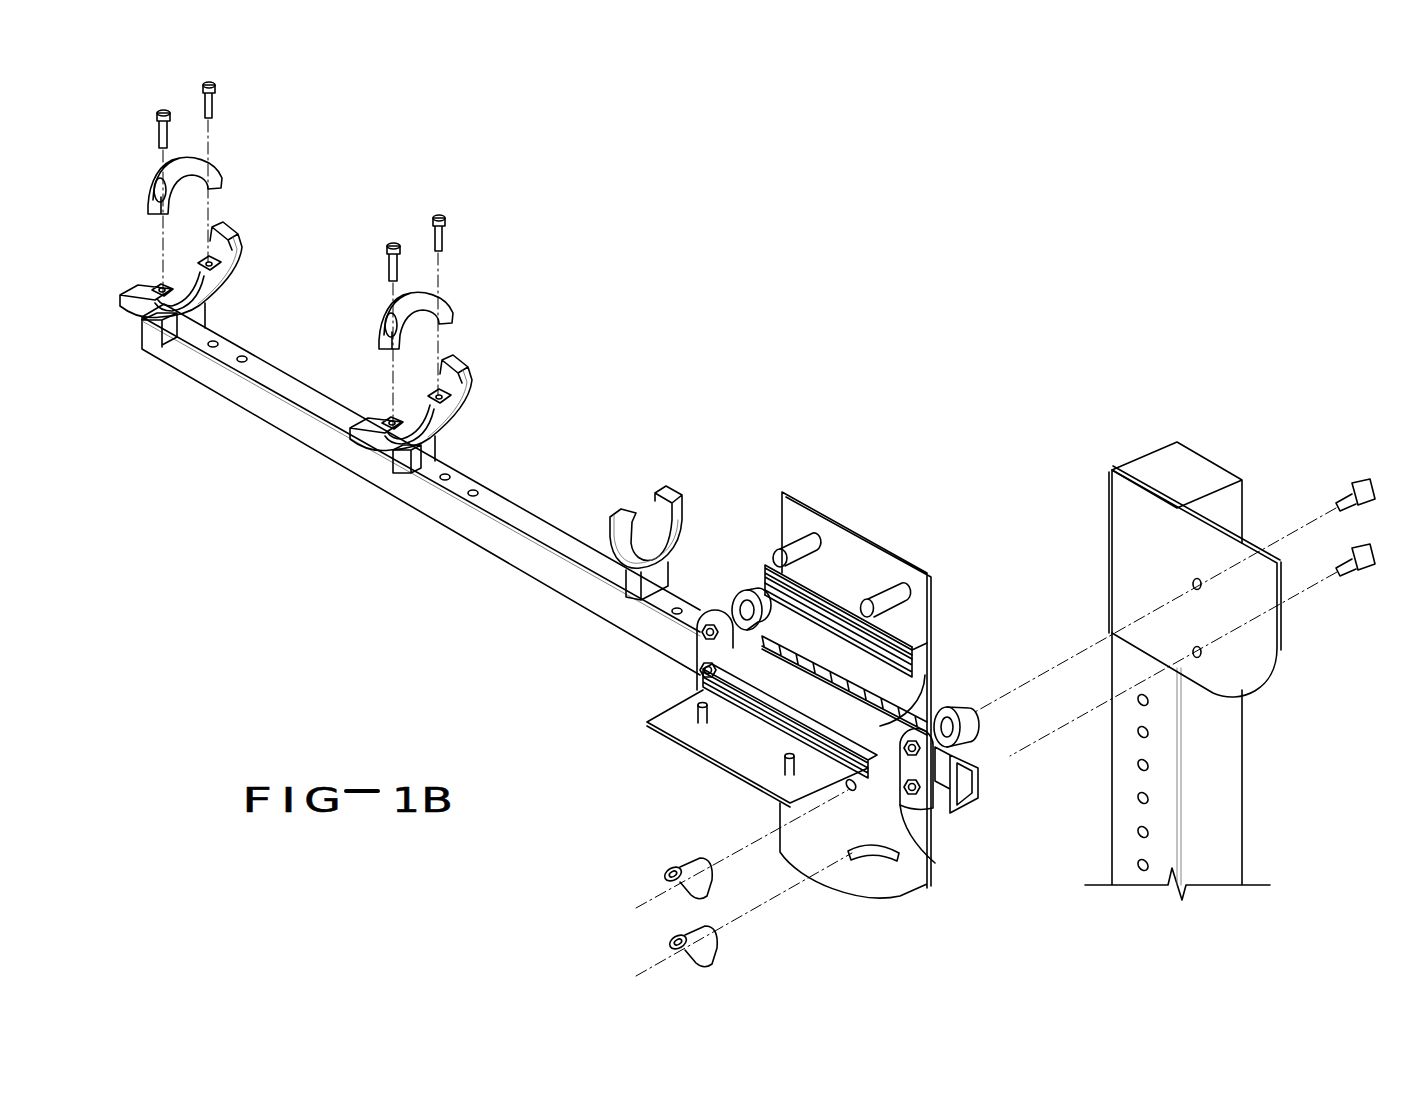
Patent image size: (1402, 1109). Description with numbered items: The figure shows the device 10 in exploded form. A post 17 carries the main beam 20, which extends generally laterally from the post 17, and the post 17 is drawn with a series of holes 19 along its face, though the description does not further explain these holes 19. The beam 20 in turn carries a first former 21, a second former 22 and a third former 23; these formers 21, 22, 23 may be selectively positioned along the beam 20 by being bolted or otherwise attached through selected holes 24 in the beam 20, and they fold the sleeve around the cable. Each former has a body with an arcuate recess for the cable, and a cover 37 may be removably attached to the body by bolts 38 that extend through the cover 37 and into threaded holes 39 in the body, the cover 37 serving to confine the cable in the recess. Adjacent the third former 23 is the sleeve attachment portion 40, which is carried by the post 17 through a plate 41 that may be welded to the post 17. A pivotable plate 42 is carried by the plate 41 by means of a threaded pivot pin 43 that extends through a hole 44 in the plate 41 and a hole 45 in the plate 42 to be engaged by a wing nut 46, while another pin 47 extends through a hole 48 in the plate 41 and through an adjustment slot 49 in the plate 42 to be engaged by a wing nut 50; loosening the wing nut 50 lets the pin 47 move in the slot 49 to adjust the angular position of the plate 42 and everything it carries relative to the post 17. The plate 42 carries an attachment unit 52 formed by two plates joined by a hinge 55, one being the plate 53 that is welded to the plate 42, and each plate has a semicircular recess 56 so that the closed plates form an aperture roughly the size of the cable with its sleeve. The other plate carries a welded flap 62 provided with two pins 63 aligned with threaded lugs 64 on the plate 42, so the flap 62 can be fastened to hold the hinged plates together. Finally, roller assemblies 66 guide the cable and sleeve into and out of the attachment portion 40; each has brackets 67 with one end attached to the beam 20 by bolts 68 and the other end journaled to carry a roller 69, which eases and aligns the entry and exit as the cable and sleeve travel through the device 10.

The device 10 is at (936, 329).
The post 17 is at (1241, 841).
The post holes 19 is at (1142, 836).
The main beam 20 is at (303, 431).
The first former 21 is at (243, 210).
The second former 22 is at (473, 326).
The third former 23 is at (676, 490).
The holes 24 is at (248, 354).
The cover 37 is at (160, 206).
The bolts 38 is at (205, 86).
The threaded holes 39 is at (170, 333).
The sleeve attachment portion 40 is at (988, 604).
The plate 41 is at (1134, 518).
The pivotable plate 42 is at (879, 569).
The threaded pivot pin 43 is at (1349, 496).
The hole 44 is at (1198, 586).
The hole 45 is at (849, 792).
The wing nut 46 is at (668, 867).
The pin 47 is at (1356, 563).
The hole 48 is at (1198, 655).
The adjustment slot 49 is at (880, 863).
The wing nut 50 is at (672, 939).
The attachment unit 52 is at (873, 567).
The plate 53 is at (926, 652).
The hinge 55 is at (889, 707).
The semicircular recess 56 is at (821, 652).
The flap 62 is at (744, 752).
The pins 63 is at (701, 714).
The threaded lugs 64 is at (799, 553).
The roller assemblies 66 is at (697, 666).
The brackets 67 is at (733, 621).
The bolts 68 is at (935, 863).
The roller 69 is at (737, 612).